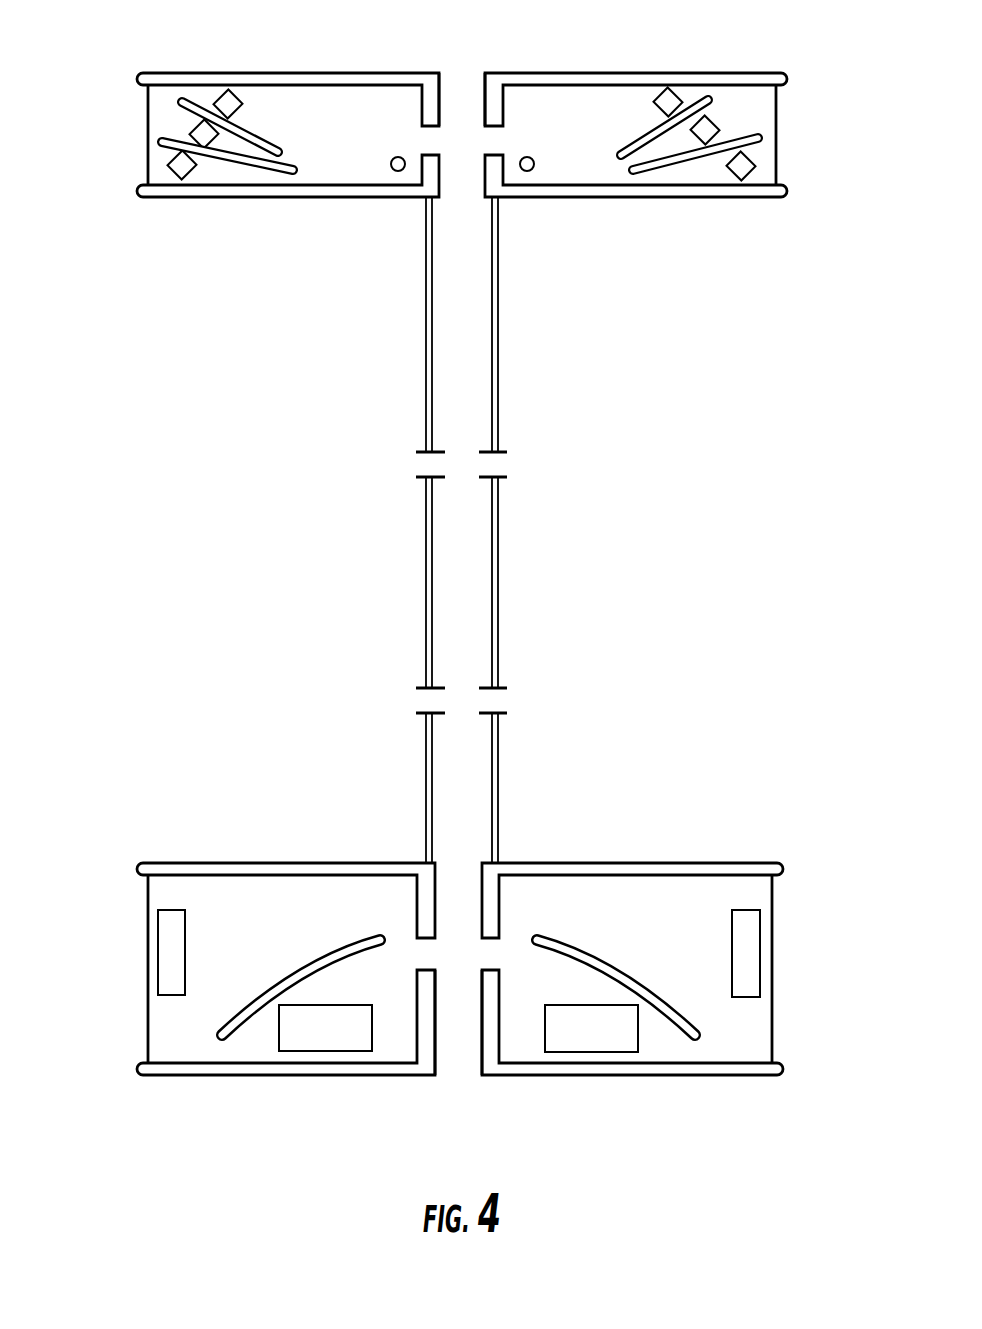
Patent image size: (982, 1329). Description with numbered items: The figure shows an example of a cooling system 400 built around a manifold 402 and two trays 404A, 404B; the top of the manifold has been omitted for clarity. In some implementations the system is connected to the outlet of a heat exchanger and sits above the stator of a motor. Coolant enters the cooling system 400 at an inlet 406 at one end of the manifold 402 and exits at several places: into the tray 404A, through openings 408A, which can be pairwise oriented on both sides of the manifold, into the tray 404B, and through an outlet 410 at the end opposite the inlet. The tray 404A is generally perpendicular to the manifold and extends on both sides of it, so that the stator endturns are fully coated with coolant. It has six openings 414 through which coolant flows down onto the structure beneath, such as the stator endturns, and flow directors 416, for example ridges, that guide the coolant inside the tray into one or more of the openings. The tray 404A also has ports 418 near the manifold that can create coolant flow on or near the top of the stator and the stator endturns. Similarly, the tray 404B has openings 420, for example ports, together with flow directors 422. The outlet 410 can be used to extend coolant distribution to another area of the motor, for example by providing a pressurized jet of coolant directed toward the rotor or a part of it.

The cooling system 400 is at (112, 1094).
The manifold 402 is at (500, 603).
The tray 404A is at (607, 73).
The tray 404B is at (615, 1077).
The inlet 406 is at (453, 73).
The opening 408A is at (510, 462).
The outlet 410 is at (468, 1072).
The openings 414 is at (242, 104).
The flow directors 416 is at (633, 147).
The ports 418 is at (392, 158).
The openings 420 is at (185, 950).
The flow directors 422 is at (300, 960).